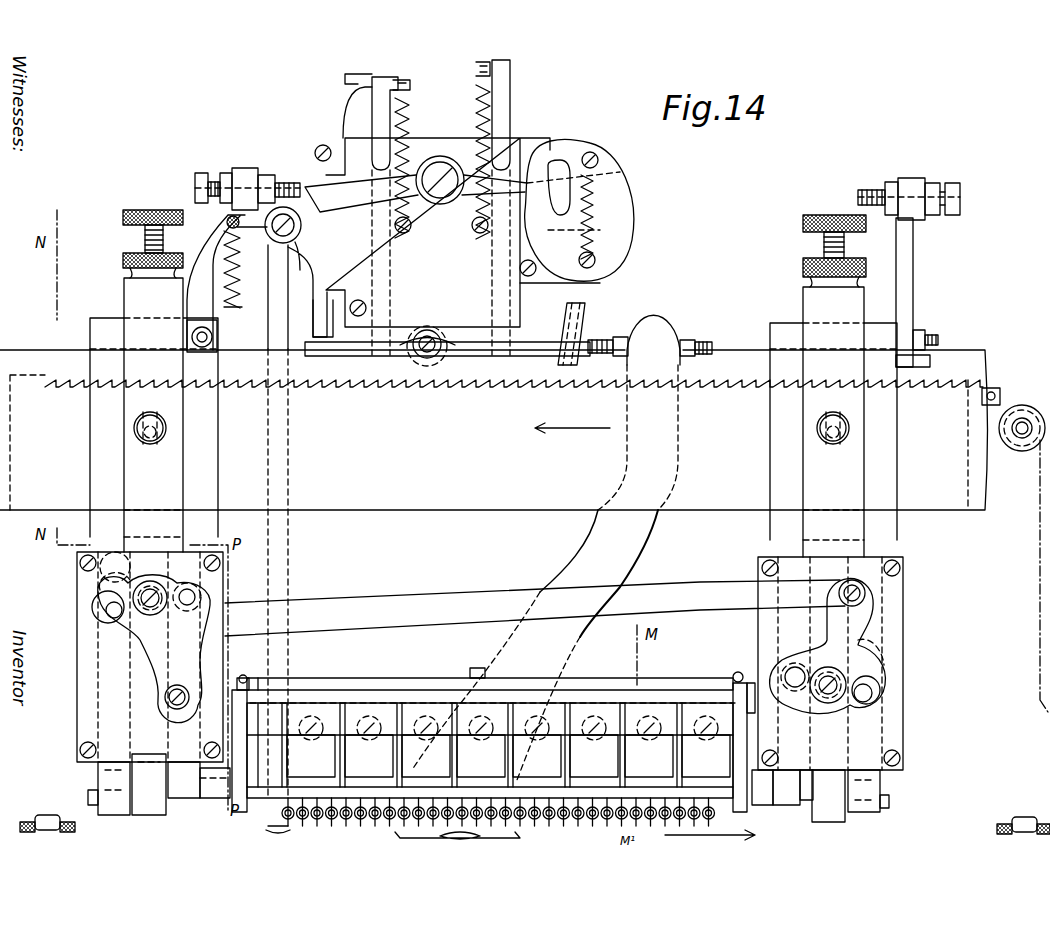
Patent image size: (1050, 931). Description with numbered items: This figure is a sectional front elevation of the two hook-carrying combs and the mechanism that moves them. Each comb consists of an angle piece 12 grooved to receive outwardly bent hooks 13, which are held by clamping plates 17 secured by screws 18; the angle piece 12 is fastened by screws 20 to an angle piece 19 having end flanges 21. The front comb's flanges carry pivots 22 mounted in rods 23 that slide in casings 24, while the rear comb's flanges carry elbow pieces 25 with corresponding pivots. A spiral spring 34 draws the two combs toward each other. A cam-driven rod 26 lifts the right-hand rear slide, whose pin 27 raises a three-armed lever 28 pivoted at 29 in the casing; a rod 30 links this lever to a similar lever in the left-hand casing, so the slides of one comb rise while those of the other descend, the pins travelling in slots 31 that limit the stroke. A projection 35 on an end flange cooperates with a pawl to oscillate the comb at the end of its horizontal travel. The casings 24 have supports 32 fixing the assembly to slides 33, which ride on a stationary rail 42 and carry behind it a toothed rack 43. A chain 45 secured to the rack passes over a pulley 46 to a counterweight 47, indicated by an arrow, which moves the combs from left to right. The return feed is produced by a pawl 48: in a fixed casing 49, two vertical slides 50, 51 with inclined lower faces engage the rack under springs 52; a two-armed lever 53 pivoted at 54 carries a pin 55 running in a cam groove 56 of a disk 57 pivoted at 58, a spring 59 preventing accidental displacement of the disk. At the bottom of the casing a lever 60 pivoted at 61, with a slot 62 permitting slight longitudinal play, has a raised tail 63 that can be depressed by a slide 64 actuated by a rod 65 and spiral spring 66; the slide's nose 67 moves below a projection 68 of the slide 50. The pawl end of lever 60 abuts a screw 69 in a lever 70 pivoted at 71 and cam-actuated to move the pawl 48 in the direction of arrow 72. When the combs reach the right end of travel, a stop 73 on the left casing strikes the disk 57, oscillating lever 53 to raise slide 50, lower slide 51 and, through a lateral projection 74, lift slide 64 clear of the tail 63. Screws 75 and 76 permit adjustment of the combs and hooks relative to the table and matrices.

The angle piece 12 is at (362, 678).
The hooks 13 is at (360, 790).
The clamping plates 17 is at (559, 758).
The screws 18 is at (418, 740).
The angle piece 19 is at (414, 700).
The screws 20 is at (485, 670).
The end flanges 21 is at (248, 762).
The pivots 22 is at (202, 800).
The rods 23 is at (182, 800).
The casings 24 is at (84, 729).
The elbow pieces 25 is at (232, 792).
The stud 26 is at (40, 815).
The pivot 27 is at (192, 600).
The three-armed lever 28 is at (160, 695).
The pivot 29 is at (150, 588).
The rod 30 is at (375, 602).
The slots 31 is at (212, 600).
The supports 32 is at (494, 513).
The slides 33 is at (218, 471).
The spiral spring 34 is at (735, 676).
The projection 35 is at (250, 680).
The stationary rail 42 is at (494, 430).
The toothed rack 43 is at (250, 390).
The chain 45 is at (1010, 396).
The pulley 46 is at (1018, 452).
The counterweight 47 is at (1040, 672).
The pawl 48 is at (578, 318).
The casing 49 is at (432, 232).
The slide 50 is at (386, 90).
The slide 51 is at (512, 70).
The spring 52 is at (478, 118).
The two-armed lever 53 is at (522, 165).
The pivot 54 is at (440, 198).
The pin 55 is at (600, 158).
The cam groove 56 is at (558, 185).
The disk 57 is at (632, 238).
The pivot 58 is at (597, 262).
The spring 59 is at (598, 200).
The lever 60 is at (400, 340).
The pivot 61 is at (432, 338).
The longitudinal slot 62 is at (432, 355).
The raised portion 63 is at (325, 358).
The slide 64 is at (298, 150).
The rod 65 is at (285, 547).
The spiral spring 66 is at (230, 288).
The nose 67 is at (343, 100).
The projection 68 is at (346, 79).
The screw 69 is at (612, 340).
The lever 70 is at (665, 320).
The pivot 71 is at (400, 840).
The arrow 72 is at (576, 436).
The stop 73 is at (278, 205).
The lateral projection 74 is at (318, 148).
The screw 75 is at (153, 210).
The screw 76 is at (152, 440).